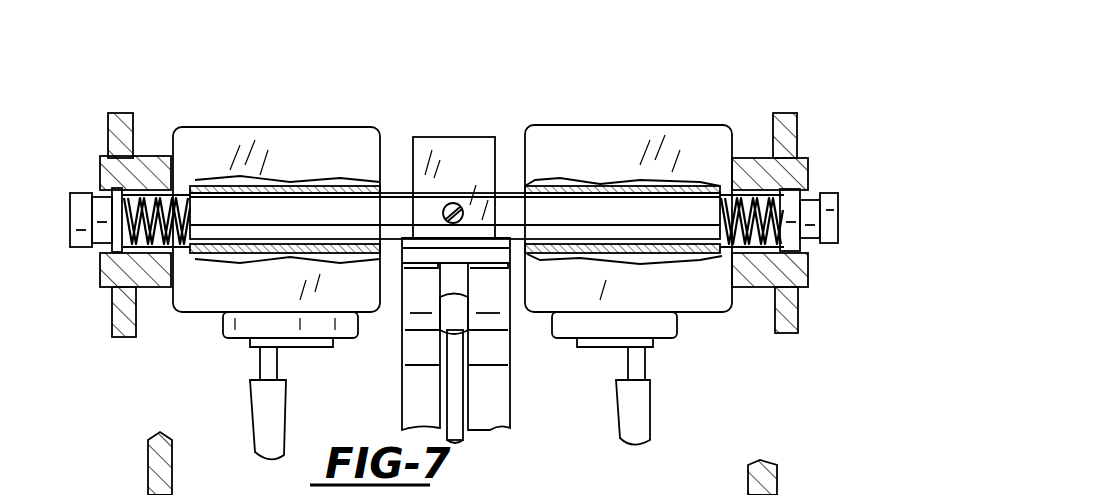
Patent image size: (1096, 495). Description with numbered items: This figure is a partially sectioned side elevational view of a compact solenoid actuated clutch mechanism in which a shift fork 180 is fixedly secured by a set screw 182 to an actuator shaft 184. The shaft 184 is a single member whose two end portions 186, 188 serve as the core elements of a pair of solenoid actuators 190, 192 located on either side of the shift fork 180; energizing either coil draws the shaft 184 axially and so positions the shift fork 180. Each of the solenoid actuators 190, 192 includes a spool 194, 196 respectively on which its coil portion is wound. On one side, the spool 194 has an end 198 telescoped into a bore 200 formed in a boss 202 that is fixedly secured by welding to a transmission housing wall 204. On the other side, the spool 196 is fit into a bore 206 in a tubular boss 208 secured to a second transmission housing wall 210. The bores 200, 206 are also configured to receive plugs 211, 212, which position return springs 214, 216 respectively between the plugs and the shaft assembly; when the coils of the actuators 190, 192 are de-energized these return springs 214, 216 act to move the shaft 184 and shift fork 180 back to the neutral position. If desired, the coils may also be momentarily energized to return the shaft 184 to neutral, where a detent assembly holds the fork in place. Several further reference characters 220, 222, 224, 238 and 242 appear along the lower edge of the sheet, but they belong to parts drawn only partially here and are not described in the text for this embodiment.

The shift fork 180 is at (514, 355).
The set screw 182 is at (455, 203).
The actuator shaft 184 is at (394, 196).
The end portion 186 is at (350, 228).
The end portion 188 is at (612, 200).
The solenoid actuator 190 is at (305, 127).
The solenoid actuator 192 is at (712, 128).
The spool 194 is at (222, 260).
The spool 196 is at (580, 192).
The spool end 198 is at (158, 192).
The bore 200 is at (133, 156).
The boss 202 is at (112, 275).
The transmission housing wall 204 is at (128, 320).
The bore 206 is at (758, 135).
The tubular boss 208 is at (758, 275).
The transmission housing wall 210 is at (790, 310).
The plug 211 is at (80, 246).
The plug 212 is at (830, 218).
The return spring 214 is at (190, 195).
The return spring 216 is at (770, 180).
The element 220 is at (618, 494).
The element 222 is at (701, 489).
The element 224 is at (537, 489).
The wall 238 is at (806, 494).
The element 242 is at (125, 463).